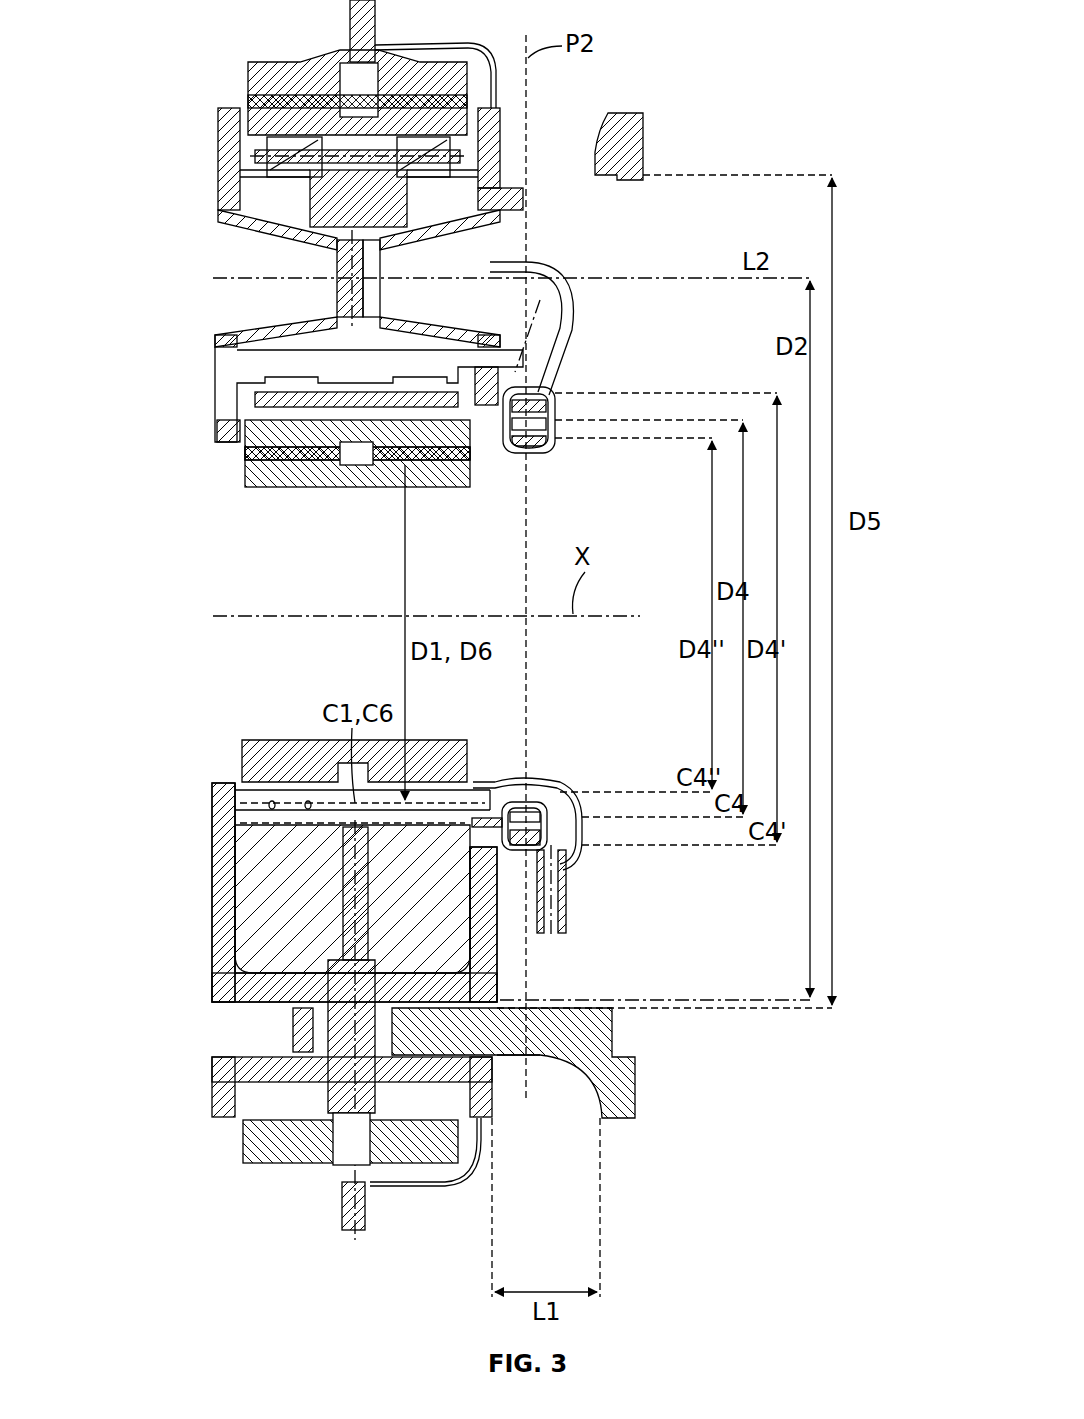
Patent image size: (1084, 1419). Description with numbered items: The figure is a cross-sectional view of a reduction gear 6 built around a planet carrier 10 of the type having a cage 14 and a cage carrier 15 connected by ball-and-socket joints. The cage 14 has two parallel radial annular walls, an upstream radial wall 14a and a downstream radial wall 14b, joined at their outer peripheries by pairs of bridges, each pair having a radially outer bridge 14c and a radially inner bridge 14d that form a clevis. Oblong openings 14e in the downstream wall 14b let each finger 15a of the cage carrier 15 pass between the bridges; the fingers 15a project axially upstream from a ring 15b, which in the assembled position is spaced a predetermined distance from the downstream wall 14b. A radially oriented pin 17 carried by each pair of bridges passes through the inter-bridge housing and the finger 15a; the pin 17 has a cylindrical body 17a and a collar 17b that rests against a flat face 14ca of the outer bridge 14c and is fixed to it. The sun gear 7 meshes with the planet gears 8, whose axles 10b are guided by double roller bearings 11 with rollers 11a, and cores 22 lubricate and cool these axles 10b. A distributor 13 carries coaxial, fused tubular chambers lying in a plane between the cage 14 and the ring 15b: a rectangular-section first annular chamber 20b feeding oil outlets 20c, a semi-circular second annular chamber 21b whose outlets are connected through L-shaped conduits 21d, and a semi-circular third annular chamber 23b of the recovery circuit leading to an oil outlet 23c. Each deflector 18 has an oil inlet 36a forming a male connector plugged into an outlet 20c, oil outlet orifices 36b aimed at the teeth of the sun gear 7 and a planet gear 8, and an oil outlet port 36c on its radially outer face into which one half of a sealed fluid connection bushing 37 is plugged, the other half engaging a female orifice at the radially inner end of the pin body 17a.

The reduction gear 6 is at (730, 176).
The sun gear 7 is at (256, 479).
The planet gears 8 is at (241, 101).
The planet carrier 10 is at (675, 117).
The axles 10b is at (232, 193).
The bearings 11 is at (253, 146).
The rollers 11a is at (293, 150).
The distributor 13 is at (568, 405).
The cage 14 is at (493, 1136).
The upstream radial wall 14a is at (222, 905).
The downstream radial wall 14b is at (488, 935).
The radially outer bridge 14c is at (253, 1074).
The flat face 14ca is at (438, 1084).
The radially inner bridge 14d is at (245, 993).
The openings 14e is at (500, 1056).
The cage carrier 15 is at (623, 1121).
The finger 15a is at (300, 1040).
The ring 15b is at (627, 130).
The pin 17 is at (350, 1136).
The cylindrical body 17a is at (368, 1090).
The collar 17b is at (318, 1078).
The deflector 18 is at (240, 866).
The first annular chamber 20b is at (540, 423).
The oil outlets 20c is at (490, 784).
The second annular chamber 21b is at (536, 398).
The L-shaped conduits 21d is at (520, 263).
The cores 22 is at (250, 234).
The third annular chamber 23b is at (540, 440).
The oil outlet 23c is at (567, 900).
The oil inlet 36a is at (450, 805).
The oil outlet orifice 36b is at (308, 800).
The oil outlet port 36c is at (348, 905).
The sealed fluid connection bushing 37 is at (365, 925).